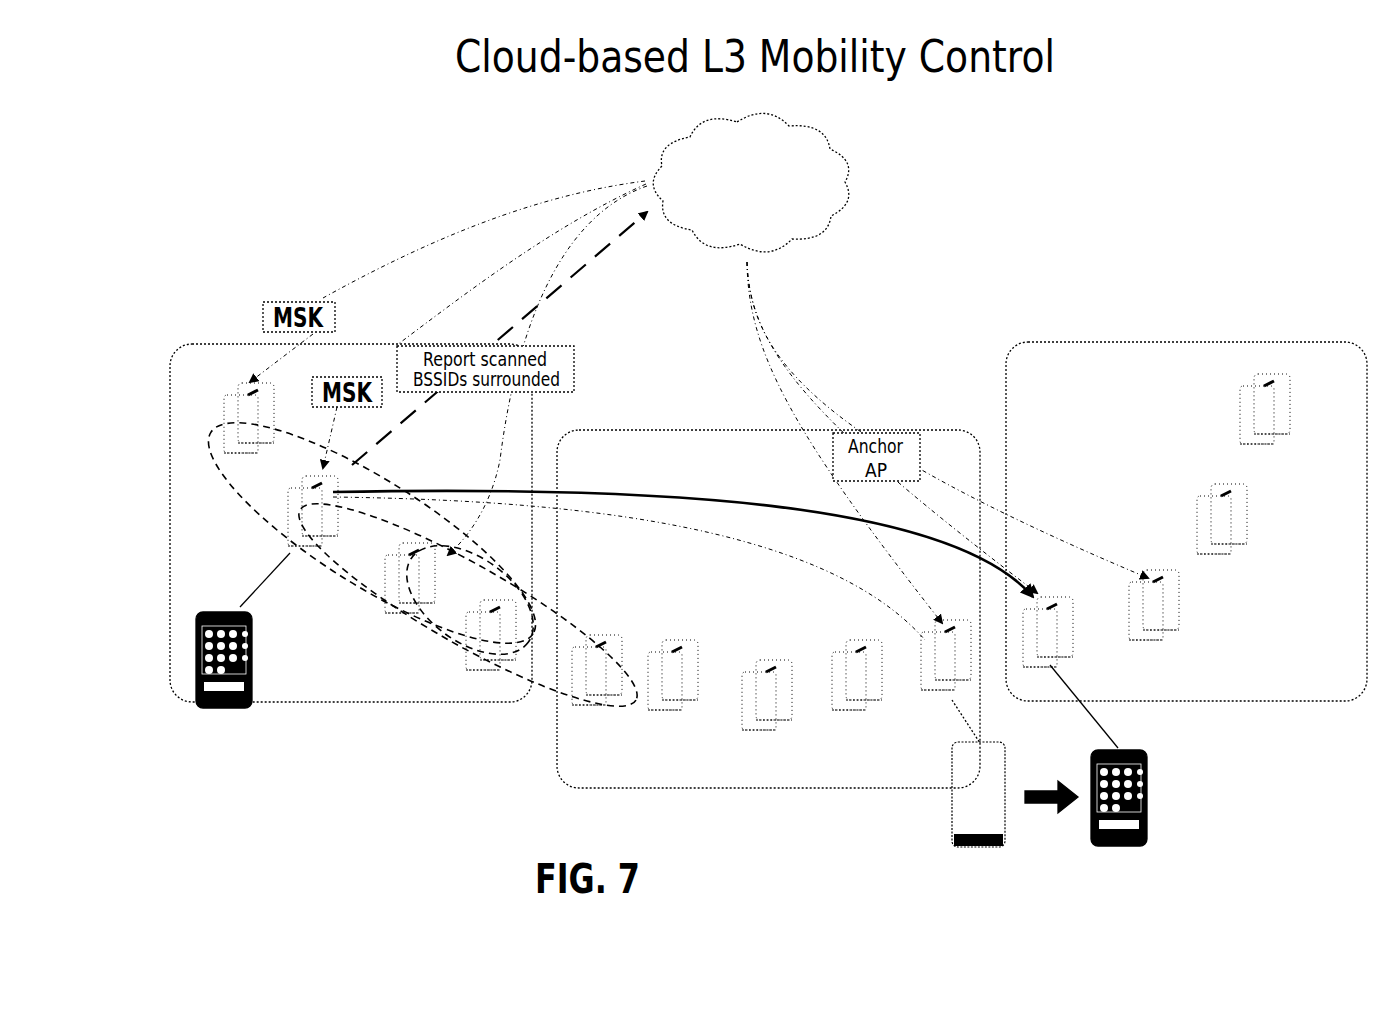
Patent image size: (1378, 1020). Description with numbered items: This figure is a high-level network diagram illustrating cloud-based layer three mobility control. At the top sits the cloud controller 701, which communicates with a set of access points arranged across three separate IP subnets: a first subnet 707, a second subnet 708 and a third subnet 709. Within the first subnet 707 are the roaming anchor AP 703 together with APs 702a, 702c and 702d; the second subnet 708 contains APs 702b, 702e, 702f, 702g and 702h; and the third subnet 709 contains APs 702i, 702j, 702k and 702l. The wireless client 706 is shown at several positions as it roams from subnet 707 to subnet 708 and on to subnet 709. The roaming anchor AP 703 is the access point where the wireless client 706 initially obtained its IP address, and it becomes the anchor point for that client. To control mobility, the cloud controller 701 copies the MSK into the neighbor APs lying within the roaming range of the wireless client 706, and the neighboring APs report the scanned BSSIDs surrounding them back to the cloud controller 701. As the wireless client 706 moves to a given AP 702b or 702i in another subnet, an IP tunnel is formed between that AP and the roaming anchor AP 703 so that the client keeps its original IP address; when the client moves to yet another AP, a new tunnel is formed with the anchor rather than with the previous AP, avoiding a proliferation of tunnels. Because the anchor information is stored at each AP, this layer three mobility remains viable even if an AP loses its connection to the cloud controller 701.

The cloud controller 701 is at (858, 196).
The AP 702a is at (232, 385).
The AP 702b is at (915, 690).
The AP 702c is at (410, 615).
The AP 702d is at (495, 672).
The AP 702e is at (608, 640).
The AP 702f is at (686, 645).
The AP 702g is at (780, 665).
The AP 702h is at (866, 645).
The AP 702i is at (1085, 578).
The AP 702j is at (1186, 615).
The AP 702k is at (1250, 530).
The AP 702l is at (1238, 392).
The roaming anchor AP 703 is at (296, 492).
The wireless client 706 is at (196, 700).
The subnet 707 is at (300, 704).
The subnet 708 is at (735, 790).
The subnet 709 is at (1222, 702).